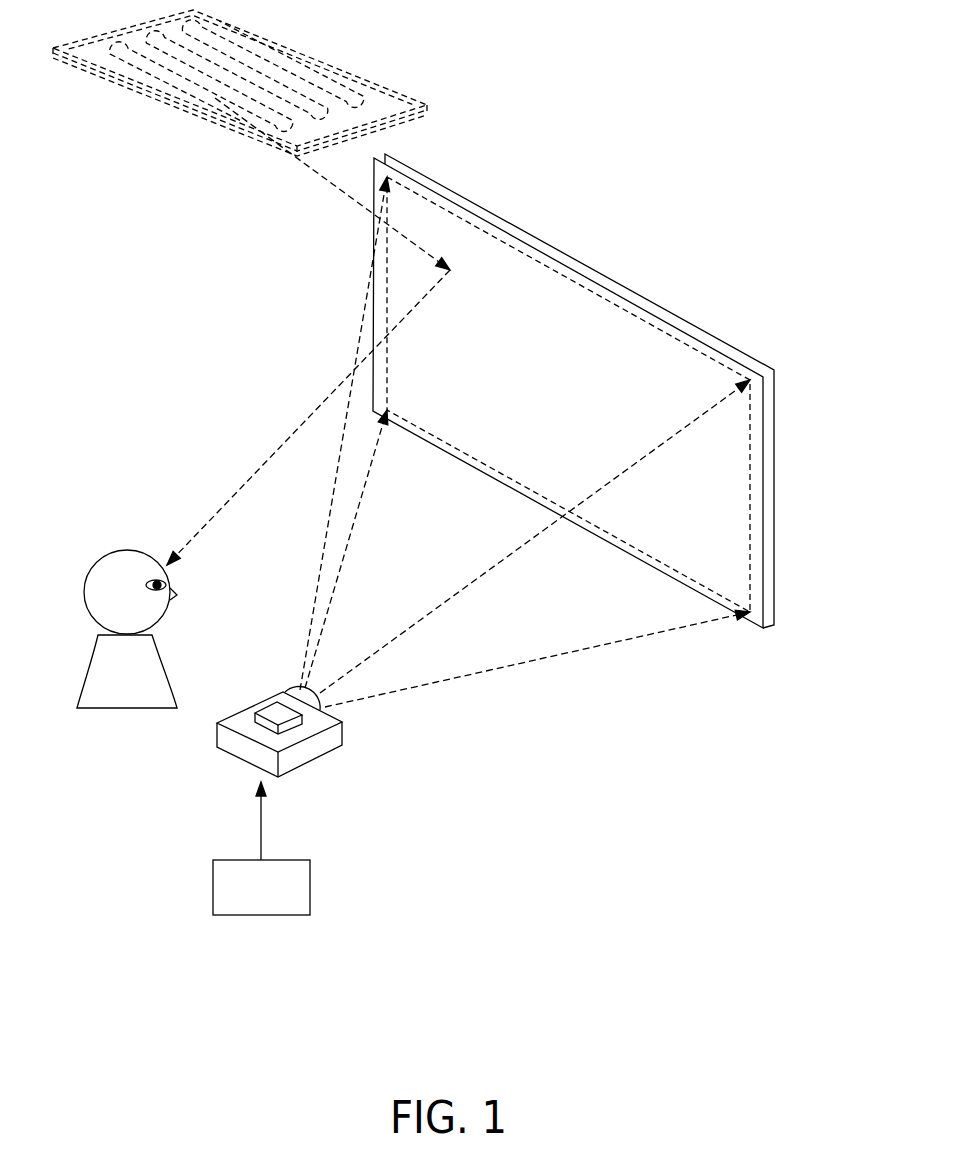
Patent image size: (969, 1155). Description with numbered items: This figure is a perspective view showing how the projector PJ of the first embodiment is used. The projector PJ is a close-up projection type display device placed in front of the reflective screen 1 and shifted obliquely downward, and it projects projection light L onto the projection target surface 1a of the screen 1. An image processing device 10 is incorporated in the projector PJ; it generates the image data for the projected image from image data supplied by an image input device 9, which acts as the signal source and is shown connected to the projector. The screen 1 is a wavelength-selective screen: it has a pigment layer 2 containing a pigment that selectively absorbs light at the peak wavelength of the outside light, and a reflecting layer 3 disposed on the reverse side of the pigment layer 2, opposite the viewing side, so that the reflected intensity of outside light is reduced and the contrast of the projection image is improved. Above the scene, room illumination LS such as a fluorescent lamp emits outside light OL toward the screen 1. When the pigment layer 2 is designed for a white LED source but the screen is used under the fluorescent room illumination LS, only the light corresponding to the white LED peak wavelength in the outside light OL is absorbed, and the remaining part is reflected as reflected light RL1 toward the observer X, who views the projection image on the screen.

The reflective screen 1 is at (573, 385).
The projection target surface 1a is at (723, 550).
The pigment layer 2 is at (542, 250).
The reflecting layer 3 is at (603, 278).
The image input device 9 is at (310, 885).
The image processing device 10 is at (321, 745).
The projector PJ is at (310, 749).
The projection light L is at (537, 659).
The room illumination LS is at (368, 78).
The outside light OL is at (315, 169).
The reflected light RL1 is at (300, 425).
The observer X is at (123, 550).